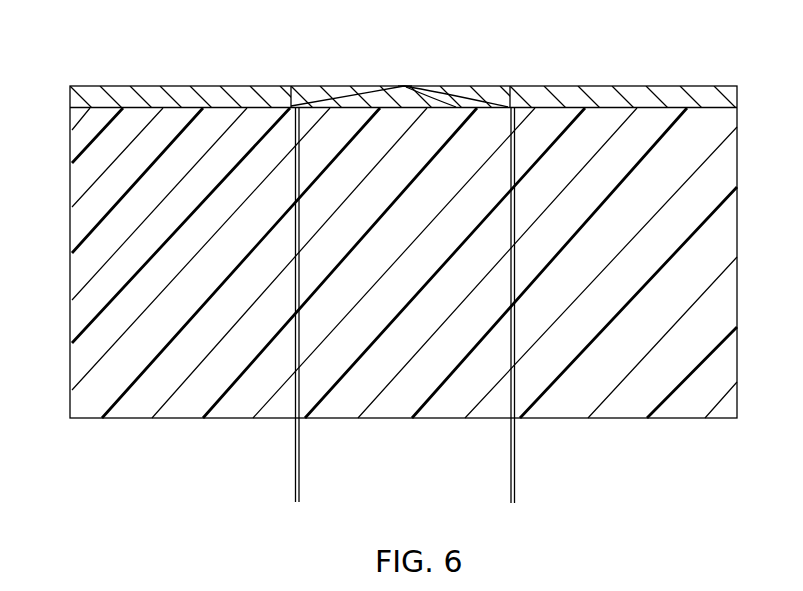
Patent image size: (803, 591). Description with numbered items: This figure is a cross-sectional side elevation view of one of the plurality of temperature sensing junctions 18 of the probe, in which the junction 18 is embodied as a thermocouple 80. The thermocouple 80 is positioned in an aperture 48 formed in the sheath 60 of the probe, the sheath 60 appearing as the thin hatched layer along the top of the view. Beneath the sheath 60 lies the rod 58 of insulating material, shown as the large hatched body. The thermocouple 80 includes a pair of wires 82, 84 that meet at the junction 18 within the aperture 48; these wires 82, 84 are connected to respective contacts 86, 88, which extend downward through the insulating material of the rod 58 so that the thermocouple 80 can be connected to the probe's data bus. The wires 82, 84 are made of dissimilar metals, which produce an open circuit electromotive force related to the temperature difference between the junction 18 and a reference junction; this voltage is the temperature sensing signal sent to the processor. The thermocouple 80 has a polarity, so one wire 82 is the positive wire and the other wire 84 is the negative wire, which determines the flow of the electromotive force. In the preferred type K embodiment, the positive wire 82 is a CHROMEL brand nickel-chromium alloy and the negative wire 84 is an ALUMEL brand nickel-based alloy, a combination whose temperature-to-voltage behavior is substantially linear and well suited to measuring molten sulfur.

The junction 18 is at (122, 65).
The sheath 60 is at (78, 103).
The aperture 48 is at (330, 86).
The positive wire 82 is at (368, 90).
The thermocouple 80 is at (410, 85).
The negative wire 84 is at (467, 92).
The rod 58 is at (97, 405).
The contact 86 is at (296, 466).
The contact 88 is at (515, 447).